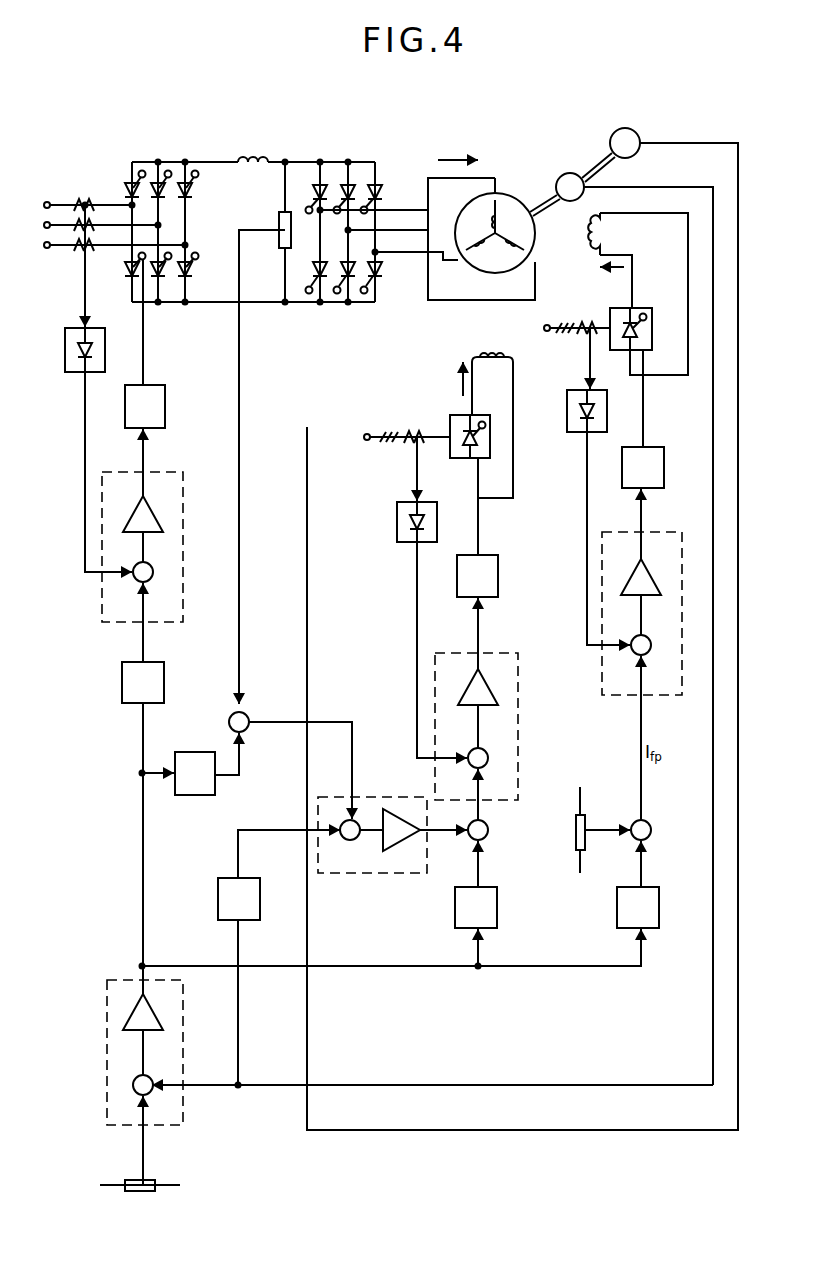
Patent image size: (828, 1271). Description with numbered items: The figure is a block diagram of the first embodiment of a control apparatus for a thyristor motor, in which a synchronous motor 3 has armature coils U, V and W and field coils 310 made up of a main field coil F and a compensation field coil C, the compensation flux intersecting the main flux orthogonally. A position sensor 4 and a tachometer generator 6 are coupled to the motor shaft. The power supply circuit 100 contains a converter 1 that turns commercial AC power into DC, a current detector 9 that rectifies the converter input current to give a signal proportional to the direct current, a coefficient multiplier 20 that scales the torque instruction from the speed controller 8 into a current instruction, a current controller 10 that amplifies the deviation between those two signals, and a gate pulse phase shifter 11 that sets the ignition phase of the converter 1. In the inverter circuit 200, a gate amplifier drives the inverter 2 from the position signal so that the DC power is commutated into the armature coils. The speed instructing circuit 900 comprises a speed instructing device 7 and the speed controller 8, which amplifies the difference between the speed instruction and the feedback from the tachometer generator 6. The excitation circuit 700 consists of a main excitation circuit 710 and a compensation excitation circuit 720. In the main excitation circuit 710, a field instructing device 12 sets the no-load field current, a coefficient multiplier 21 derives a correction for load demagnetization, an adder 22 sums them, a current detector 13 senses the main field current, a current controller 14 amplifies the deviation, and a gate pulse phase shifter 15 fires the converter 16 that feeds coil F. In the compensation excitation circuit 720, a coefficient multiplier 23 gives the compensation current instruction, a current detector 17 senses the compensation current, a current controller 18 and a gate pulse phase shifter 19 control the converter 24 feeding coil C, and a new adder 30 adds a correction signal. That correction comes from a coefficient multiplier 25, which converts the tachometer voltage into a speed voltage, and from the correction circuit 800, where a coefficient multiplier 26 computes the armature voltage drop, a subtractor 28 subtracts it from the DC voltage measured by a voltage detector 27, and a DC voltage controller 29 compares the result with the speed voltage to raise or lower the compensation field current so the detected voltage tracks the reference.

The converter 1 is at (198, 216).
The inverter 2 is at (382, 178).
The synchronous motor 3 is at (527, 193).
The position sensor 4 is at (632, 130).
The tachometer generator 6 is at (578, 174).
The speed instructing device 7 is at (149, 1193).
The speed controller 8 is at (183, 1028).
The current detector 9 is at (68, 373).
The current controller 10 is at (183, 479).
The gate pulse phase shifter 11 is at (165, 391).
The field instructing device 12 is at (576, 815).
The current detector 13 is at (568, 432).
The current controller 14 is at (678, 532).
The gate pulse phase shifter 15 is at (664, 448).
The converter 16 is at (648, 308).
The current detector 17 is at (396, 501).
The current controller 18 is at (518, 653).
The gate pulse phase shifter 19 is at (498, 562).
The coefficient multiplier 20 is at (164, 668).
The coefficient multiplier 21 is at (655, 930).
The adder 22 is at (651, 828).
The coefficient multiplier 23 is at (497, 890).
The converter 24 is at (476, 420).
The coefficient multiplier 25 is at (260, 881).
The coefficient multiplier 26 is at (188, 753).
The voltage detector 27 is at (279, 214).
The subtractor 28 is at (251, 714).
The DC voltage controller 29 is at (387, 873).
The adder 30 is at (488, 832).
The power supply circuit 100 is at (162, 148).
The inverter circuit 200 is at (392, 148).
The field coils 310 is at (507, 330).
The excitation circuit 700 is at (572, 1005).
The main excitation circuit 710 is at (621, 721).
The compensation excitation circuit 720 is at (409, 644).
The correction circuit 800 is at (357, 688).
The speed instructing circuit 900 is at (237, 1151).